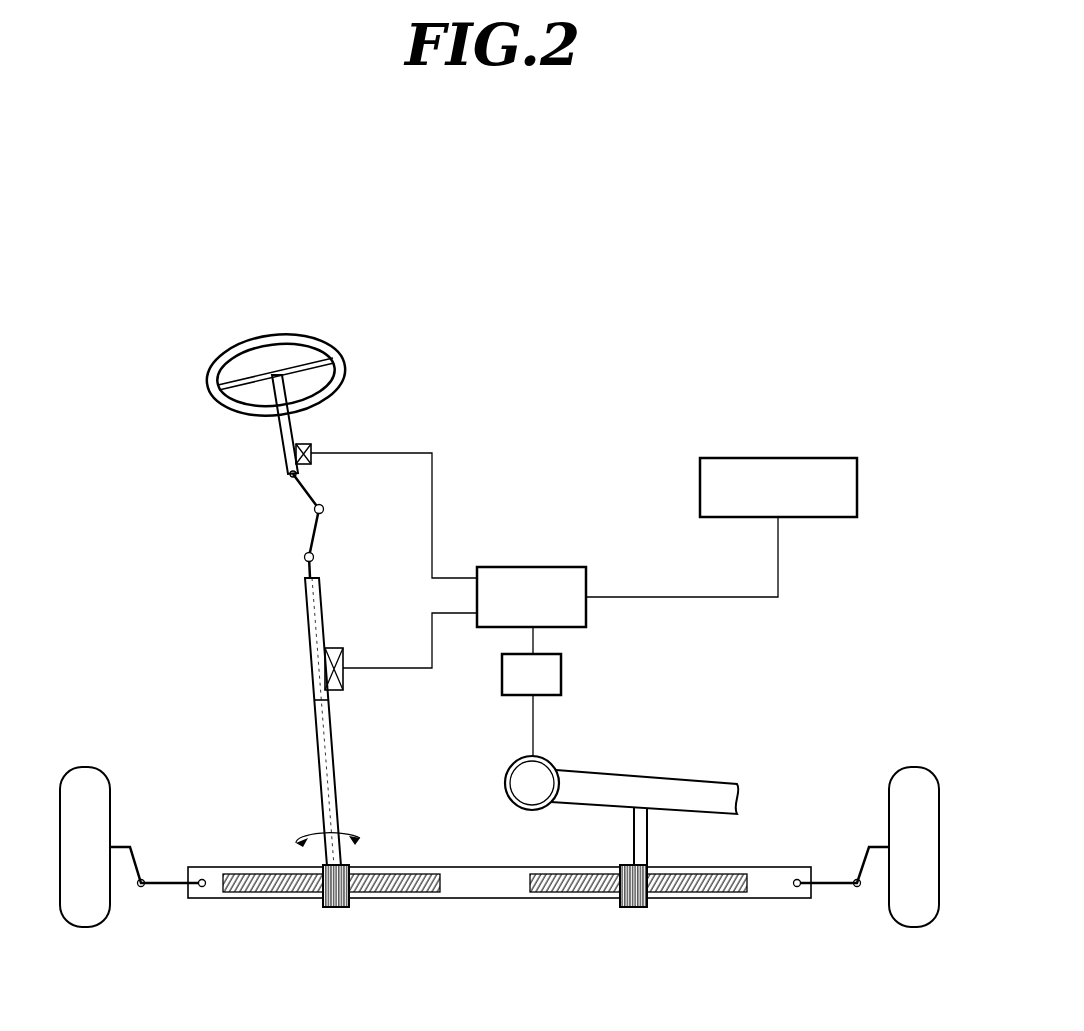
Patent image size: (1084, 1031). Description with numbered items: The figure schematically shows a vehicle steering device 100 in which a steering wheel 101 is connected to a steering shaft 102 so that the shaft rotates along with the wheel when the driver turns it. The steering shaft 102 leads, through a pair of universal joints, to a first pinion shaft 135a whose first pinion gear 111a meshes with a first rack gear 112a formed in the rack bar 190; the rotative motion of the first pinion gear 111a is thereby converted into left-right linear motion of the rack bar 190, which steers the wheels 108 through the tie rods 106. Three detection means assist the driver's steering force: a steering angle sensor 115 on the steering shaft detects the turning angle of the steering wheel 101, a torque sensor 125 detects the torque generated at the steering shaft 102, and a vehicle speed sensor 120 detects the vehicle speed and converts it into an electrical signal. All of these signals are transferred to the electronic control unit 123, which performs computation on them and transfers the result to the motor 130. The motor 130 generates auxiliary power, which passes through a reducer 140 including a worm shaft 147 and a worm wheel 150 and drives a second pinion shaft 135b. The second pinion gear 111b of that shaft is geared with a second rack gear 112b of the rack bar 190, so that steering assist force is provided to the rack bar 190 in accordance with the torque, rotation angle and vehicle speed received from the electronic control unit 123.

The steering system 100 is at (830, 272).
The steering wheel 101 is at (318, 347).
The steering shaft 102 is at (284, 440).
The tie rods 106 is at (838, 880).
The wheels 108 is at (912, 770).
The first pinion gear 111a is at (335, 908).
The second pinion gear 111b is at (633, 908).
The first rack gear 112a is at (245, 893).
The second rack gear 112b is at (695, 890).
The steering angle sensor 115 is at (311, 446).
The vehicle speed sensor 120 is at (700, 487).
The electronic control unit 123 is at (588, 621).
The torque sensor 125 is at (331, 648).
The motor 130 is at (502, 685).
The first pinion shaft 135a is at (316, 730).
The second pinion shaft 135b is at (630, 841).
The reducer 140 is at (677, 723).
The worm shaft 147 is at (540, 770).
The worm wheel 150 is at (713, 780).
The rack bar 190 is at (483, 867).